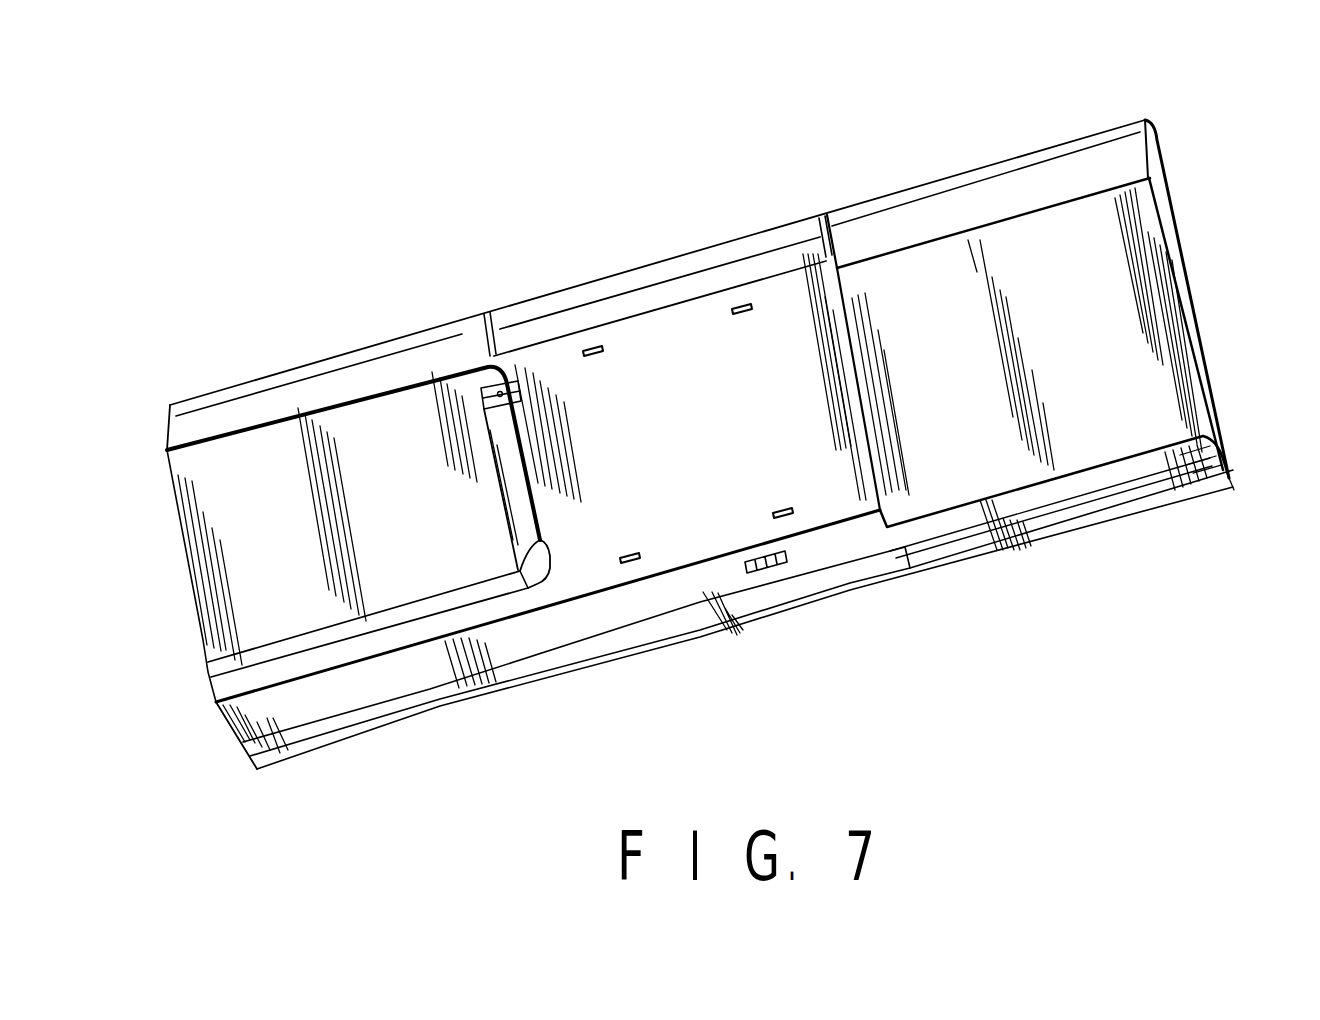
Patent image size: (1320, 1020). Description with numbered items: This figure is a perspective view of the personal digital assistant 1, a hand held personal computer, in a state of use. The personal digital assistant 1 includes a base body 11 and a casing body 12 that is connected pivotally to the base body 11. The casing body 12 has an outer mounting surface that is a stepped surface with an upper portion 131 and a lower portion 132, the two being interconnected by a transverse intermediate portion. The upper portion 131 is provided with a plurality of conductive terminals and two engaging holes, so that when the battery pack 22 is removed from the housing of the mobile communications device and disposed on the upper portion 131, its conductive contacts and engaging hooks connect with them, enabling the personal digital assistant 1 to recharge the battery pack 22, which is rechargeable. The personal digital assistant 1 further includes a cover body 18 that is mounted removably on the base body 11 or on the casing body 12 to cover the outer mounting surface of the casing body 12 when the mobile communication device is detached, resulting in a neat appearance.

The personal digital assistant 1 is at (1128, 613).
The base body 11 is at (538, 673).
The casing body 12 is at (400, 682).
The cover body 18 is at (1125, 510).
The battery pack 22 is at (257, 475).
The upper portion 131 is at (665, 362).
The lower portion 132 is at (965, 270).